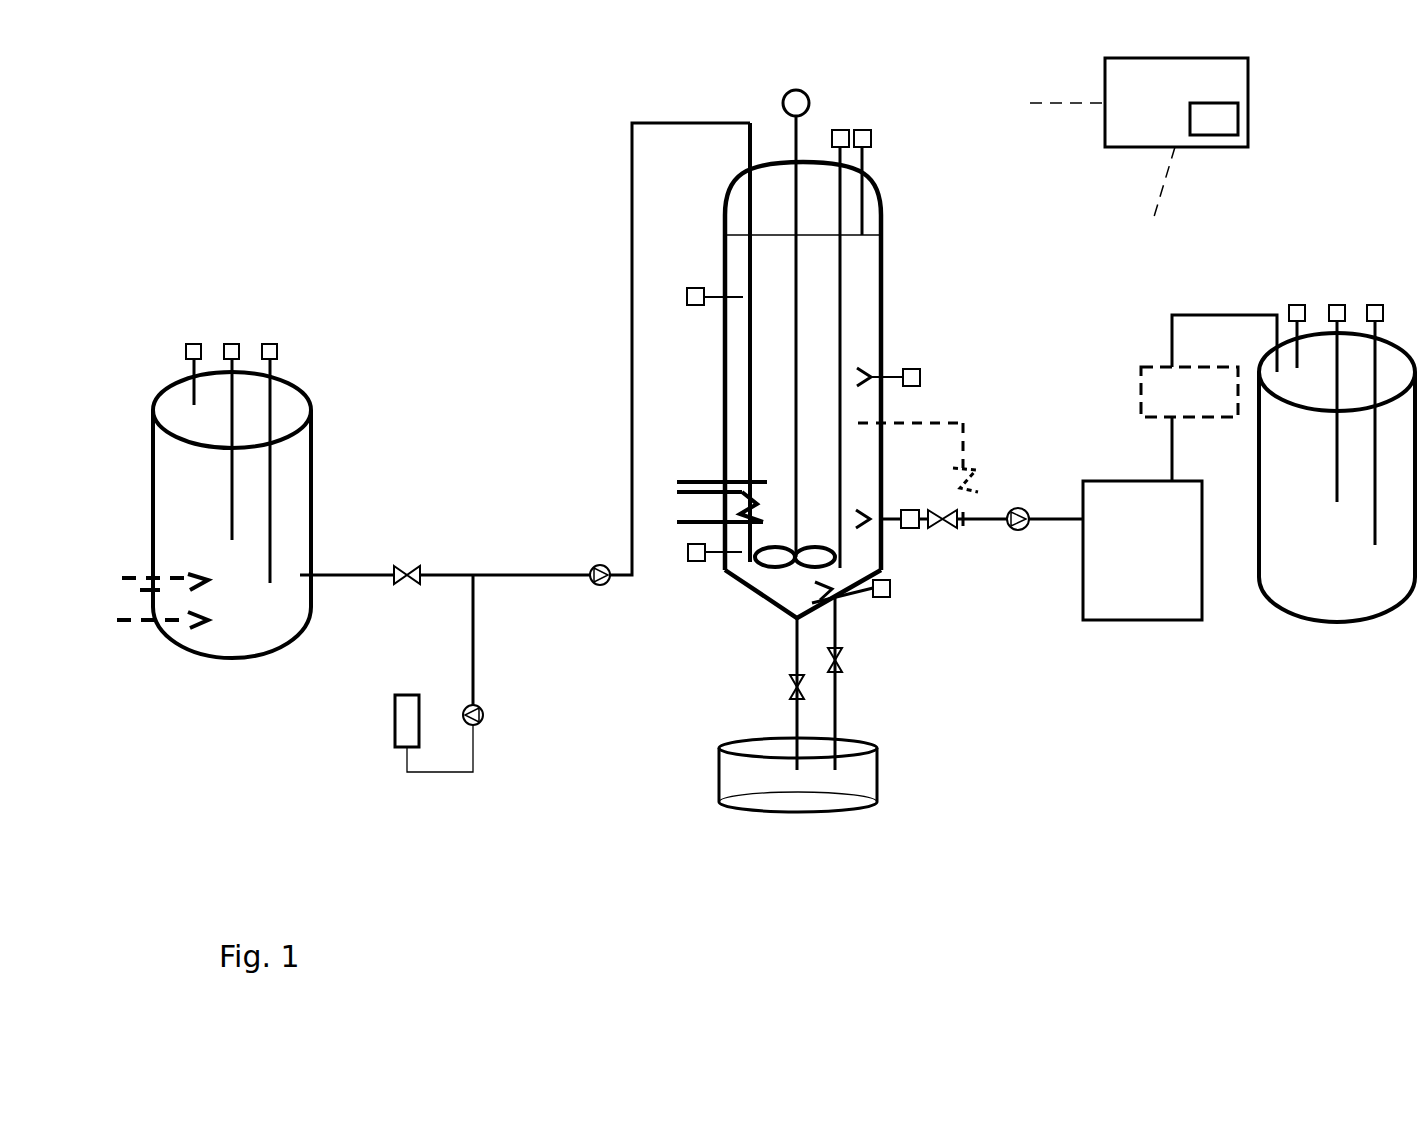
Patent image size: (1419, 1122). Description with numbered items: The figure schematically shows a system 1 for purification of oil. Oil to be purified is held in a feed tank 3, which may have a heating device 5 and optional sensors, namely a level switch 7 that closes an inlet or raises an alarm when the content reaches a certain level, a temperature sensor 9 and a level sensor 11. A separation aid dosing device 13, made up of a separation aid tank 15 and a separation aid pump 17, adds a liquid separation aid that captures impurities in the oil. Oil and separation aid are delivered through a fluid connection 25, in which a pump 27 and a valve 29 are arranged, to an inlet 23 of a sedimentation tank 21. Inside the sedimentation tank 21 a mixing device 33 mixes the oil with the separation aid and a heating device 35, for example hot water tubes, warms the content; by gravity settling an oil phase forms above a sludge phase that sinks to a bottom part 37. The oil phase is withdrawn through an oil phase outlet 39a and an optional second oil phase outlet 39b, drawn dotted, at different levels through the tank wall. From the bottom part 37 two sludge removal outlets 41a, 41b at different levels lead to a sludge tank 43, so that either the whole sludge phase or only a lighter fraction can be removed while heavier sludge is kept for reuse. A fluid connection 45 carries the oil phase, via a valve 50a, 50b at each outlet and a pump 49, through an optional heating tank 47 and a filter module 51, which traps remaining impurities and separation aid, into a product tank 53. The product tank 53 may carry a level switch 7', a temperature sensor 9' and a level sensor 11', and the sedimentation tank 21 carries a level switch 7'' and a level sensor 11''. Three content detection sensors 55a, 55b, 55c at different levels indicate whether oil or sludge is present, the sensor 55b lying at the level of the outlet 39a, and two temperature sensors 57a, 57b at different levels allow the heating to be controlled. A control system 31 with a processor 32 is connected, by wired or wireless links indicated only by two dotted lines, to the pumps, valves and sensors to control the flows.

The system 1 is at (440, 212).
The feed tank 3 is at (312, 465).
The heating device 5 is at (148, 620).
The level switch 7 is at (192, 351).
The temperature sensor 9 is at (234, 411).
The level sensor 11 is at (286, 445).
The separation aid dosing device 13 is at (525, 519).
The separation aid tank 15 is at (392, 737).
The separation aid pump 17 is at (483, 722).
The sedimentation tank 21 is at (885, 237).
The inlet 23 is at (748, 164).
The fluid connection 25 is at (552, 573).
The pump 27 is at (600, 587).
The valve 29 is at (408, 565).
The control system 31 is at (1248, 103).
The processor 32 is at (1242, 142).
The mixing device 33 is at (768, 565).
The heating device 35 is at (707, 480).
The bottom part 37 is at (823, 522).
The oil phase outlet 39a is at (922, 488).
The oil phase outlet 39b is at (866, 423).
The sludge removal outlet 41a is at (795, 625).
The sludge removal outlet 41b is at (840, 602).
The sludge tank 43 is at (858, 806).
The fluid connection 45 is at (1048, 522).
The heating tank 47 is at (1102, 622).
The pump 49 is at (1016, 531).
The valve 50a is at (935, 528).
The valve 50b is at (975, 490).
The filter module 51 is at (1140, 367).
The product tank 53 is at (1268, 597).
The content detection sensor 55a is at (842, 594).
The content detection sensor 55b is at (823, 591).
The content detection sensor 55c is at (921, 378).
The temperature sensor 57a is at (697, 562).
The temperature sensor 57b is at (694, 287).
The level switch 7' is at (1283, 305).
The temperature sensor 9' is at (1336, 376).
The level sensor 11' is at (1393, 402).
The level switch 7'' is at (904, 170).
The level sensor 11'' is at (871, 321).